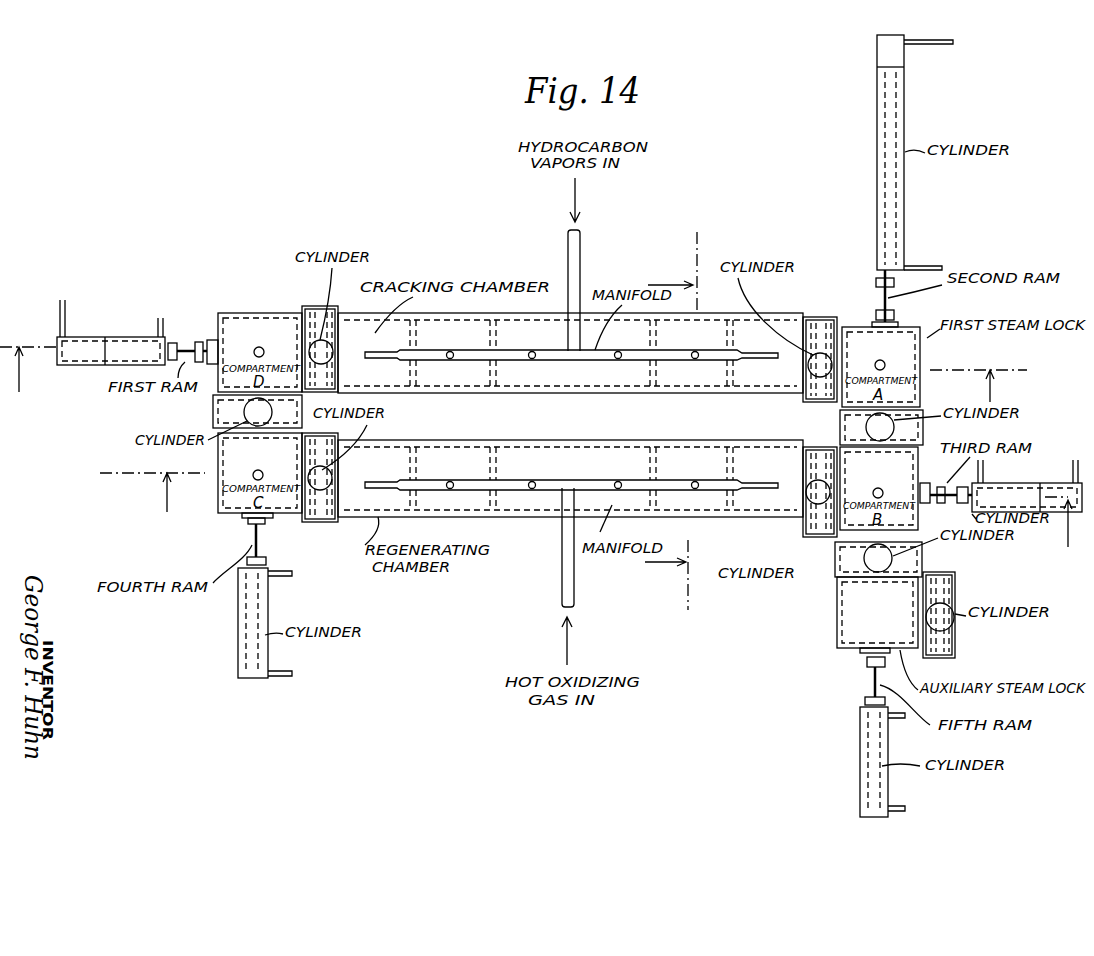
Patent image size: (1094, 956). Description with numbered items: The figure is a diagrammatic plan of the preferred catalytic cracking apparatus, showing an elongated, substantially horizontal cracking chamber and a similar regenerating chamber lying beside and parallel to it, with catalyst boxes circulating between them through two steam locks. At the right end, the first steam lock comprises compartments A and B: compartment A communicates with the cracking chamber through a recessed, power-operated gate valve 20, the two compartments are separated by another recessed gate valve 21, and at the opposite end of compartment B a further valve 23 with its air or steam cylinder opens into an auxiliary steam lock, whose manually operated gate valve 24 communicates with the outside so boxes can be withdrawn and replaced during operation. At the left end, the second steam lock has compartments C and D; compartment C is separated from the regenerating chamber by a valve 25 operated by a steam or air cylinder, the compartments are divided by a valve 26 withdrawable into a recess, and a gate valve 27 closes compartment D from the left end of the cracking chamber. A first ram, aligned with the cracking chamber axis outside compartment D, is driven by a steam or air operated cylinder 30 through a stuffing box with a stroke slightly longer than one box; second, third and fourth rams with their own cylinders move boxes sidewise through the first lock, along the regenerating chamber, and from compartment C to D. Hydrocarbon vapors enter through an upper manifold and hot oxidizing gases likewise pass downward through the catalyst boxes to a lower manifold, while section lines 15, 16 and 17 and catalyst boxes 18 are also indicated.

The section line 15 is at (513, 374).
The section line 16 is at (595, 510).
The section line 17 is at (671, 421).
The catalyst boxes 18 is at (727, 463).
The gate valve 20 is at (840, 306).
The gate valve 21 is at (925, 432).
The valve 23 is at (920, 564).
The gate valve 24 is at (937, 648).
The valve 25 is at (310, 523).
The valve 26 is at (215, 410).
The gate valve 27 is at (312, 307).
The steam or air operated cylinder 30 is at (113, 310).